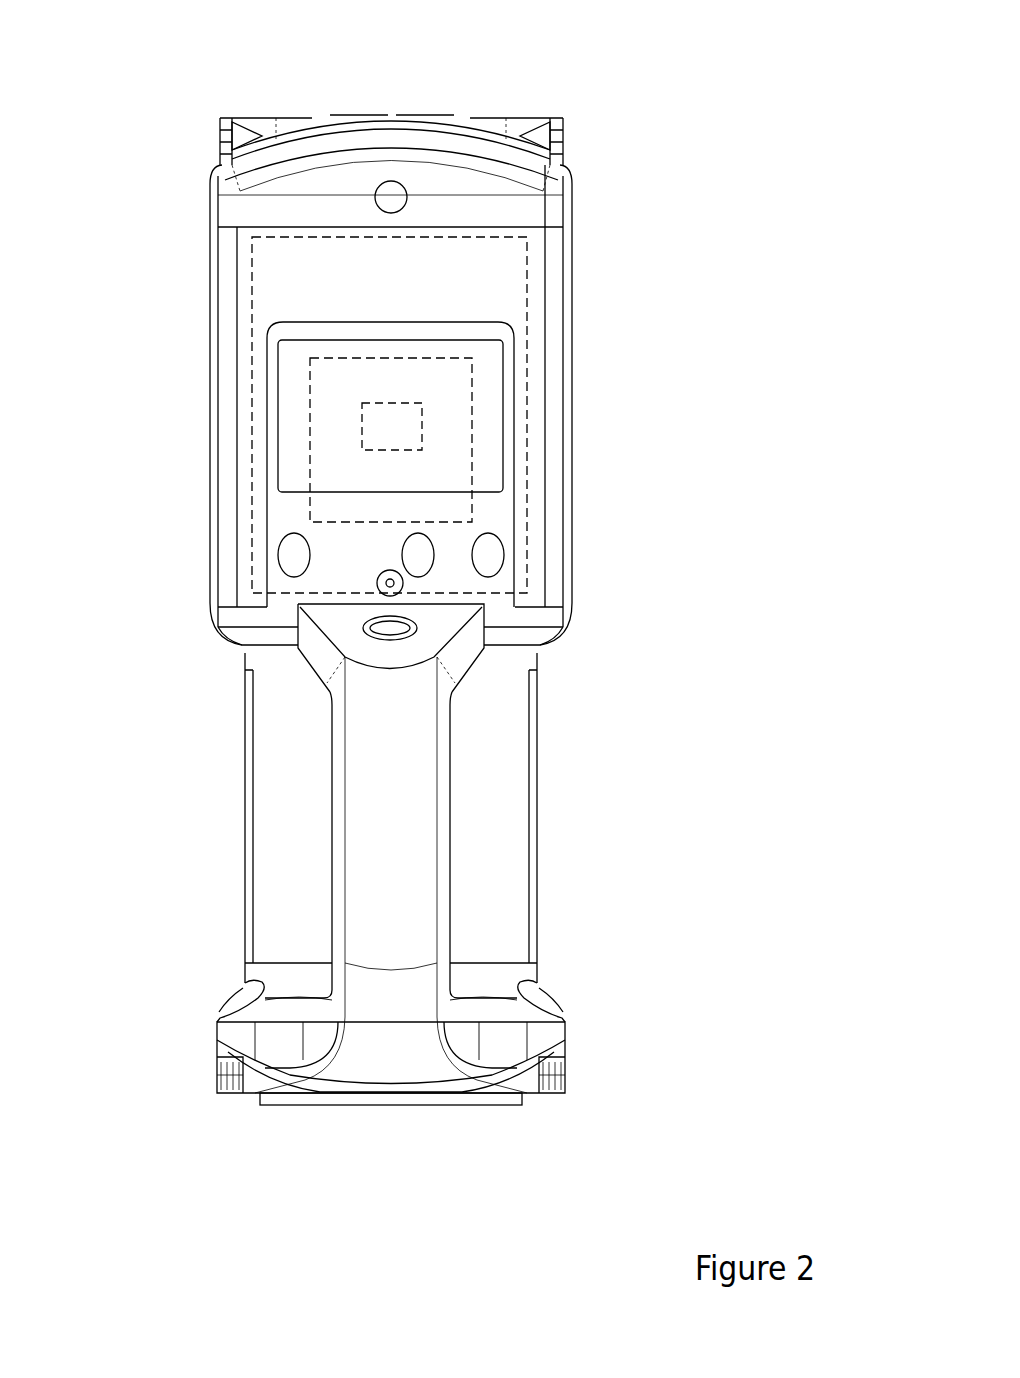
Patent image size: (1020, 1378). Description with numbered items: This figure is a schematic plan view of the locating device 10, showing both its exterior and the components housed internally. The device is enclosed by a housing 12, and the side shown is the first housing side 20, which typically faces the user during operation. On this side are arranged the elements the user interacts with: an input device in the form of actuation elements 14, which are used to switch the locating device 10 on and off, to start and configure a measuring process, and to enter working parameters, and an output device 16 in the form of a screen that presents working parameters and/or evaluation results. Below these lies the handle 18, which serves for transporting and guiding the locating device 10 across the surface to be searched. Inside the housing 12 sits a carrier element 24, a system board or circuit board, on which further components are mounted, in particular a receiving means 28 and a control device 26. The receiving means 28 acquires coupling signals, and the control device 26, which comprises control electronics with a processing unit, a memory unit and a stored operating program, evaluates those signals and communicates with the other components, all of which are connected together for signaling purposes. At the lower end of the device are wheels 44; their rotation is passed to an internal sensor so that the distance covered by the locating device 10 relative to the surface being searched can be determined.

The locating device 10 is at (590, 100).
The housing 12 is at (278, 787).
The actuation elements 14 is at (486, 555).
The output device 16 is at (278, 373).
The handle 18 is at (392, 1045).
The first housing side 20 is at (319, 213).
The carrier element 24 is at (282, 272).
The control device 26 is at (470, 470).
The receiving means 28 is at (397, 408).
The wheels 44 is at (541, 1112).